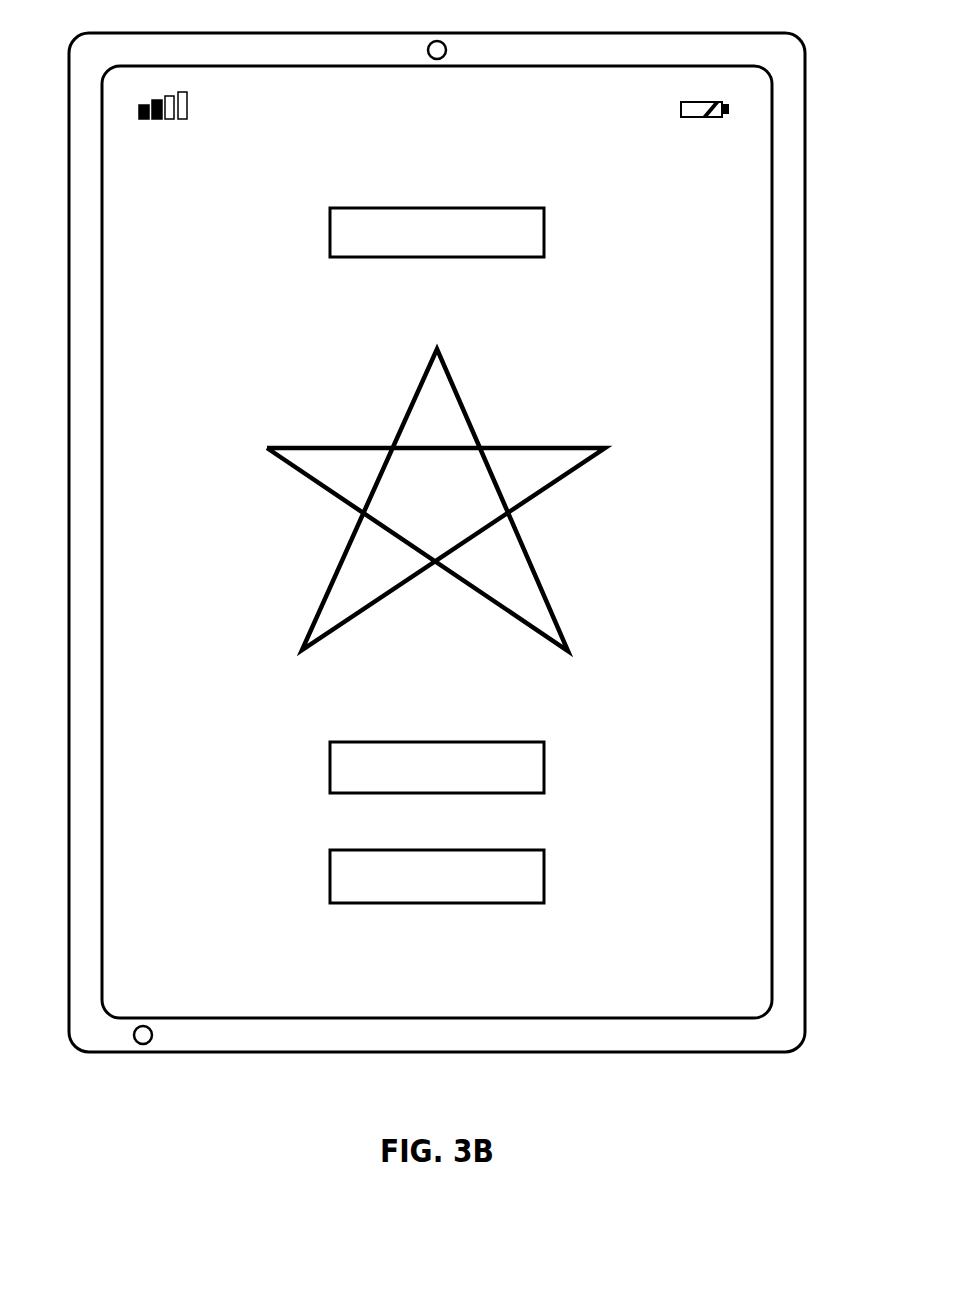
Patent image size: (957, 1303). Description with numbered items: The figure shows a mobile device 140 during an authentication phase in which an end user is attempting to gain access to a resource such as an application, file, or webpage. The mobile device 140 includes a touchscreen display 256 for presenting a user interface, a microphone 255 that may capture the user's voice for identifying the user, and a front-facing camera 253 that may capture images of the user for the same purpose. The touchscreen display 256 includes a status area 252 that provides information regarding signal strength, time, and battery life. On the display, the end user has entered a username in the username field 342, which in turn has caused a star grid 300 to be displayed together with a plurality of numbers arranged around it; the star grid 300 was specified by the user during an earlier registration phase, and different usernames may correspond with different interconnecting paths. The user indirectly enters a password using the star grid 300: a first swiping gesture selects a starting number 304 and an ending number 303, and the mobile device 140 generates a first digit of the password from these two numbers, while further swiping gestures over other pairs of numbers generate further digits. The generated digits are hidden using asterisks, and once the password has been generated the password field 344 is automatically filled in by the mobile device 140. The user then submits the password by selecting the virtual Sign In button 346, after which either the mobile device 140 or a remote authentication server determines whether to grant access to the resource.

The mobile device 140 is at (469, 565).
The status area 252 is at (815, 87).
The front-facing camera 253 is at (447, 45).
The microphone 255 is at (153, 1031).
The touchscreen display 256 is at (437, 542).
The star grid 300 is at (453, 381).
The ending number 303 is at (374, 421).
The starting number 304 is at (552, 520).
The username field 342 is at (545, 229).
The password field 344 is at (545, 764).
The virtual Sign In button 346 is at (545, 879).